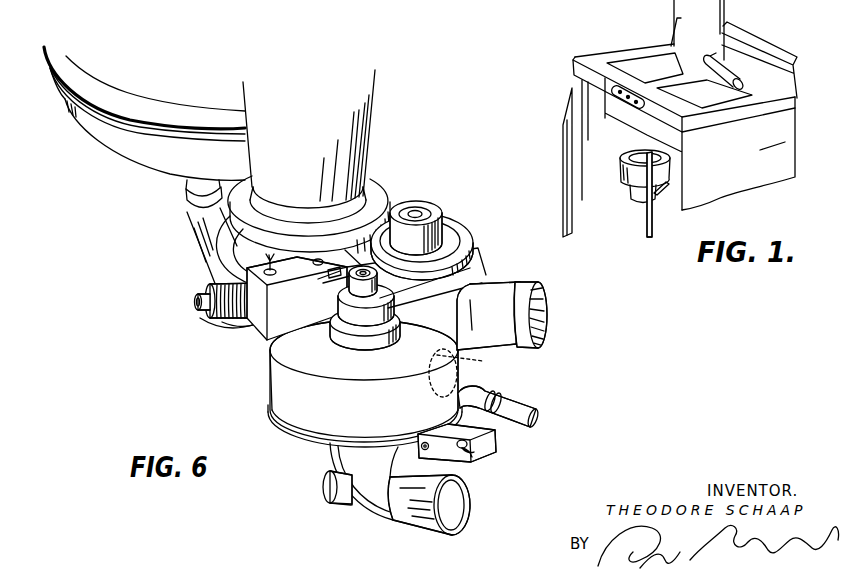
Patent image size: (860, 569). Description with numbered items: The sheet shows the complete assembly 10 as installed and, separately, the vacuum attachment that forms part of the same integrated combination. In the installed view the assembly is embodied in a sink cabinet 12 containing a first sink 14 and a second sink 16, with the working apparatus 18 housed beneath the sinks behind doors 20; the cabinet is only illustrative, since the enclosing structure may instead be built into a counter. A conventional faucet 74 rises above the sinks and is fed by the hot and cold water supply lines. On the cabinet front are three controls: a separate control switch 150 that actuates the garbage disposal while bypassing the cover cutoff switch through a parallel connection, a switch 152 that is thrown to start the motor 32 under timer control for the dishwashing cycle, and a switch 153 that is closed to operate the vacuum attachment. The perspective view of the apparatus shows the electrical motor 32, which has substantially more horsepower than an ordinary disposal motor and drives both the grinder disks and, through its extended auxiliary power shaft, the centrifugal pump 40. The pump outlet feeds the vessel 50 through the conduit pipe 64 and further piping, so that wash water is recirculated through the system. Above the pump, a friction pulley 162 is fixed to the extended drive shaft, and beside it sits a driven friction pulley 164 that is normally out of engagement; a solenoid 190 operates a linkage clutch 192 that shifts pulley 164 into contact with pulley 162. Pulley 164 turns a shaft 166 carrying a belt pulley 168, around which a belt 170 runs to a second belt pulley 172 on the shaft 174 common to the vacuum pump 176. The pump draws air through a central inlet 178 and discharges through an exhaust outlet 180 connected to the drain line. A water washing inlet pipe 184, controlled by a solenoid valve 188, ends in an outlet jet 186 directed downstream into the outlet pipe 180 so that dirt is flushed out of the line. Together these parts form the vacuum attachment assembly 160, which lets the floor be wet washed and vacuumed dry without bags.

In FIG. 1, the complete assembly 10 is at (755, 35).
In FIG. 1, the sink cabinet 12 is at (790, 110).
In FIG. 1, the first sink 14 is at (738, 95).
In FIG. 1, the second sink 16 is at (635, 64).
In FIG. 1, the apparatus 18 is at (630, 182).
In FIG. 1, the doors 20 is at (568, 132).
In FIG. 1, the faucet 74 is at (714, 54).
In FIG. 1, the control switch 150 is at (643, 106).
In FIG. 1, the switch 152 is at (614, 96).
In FIG. 1, the switch 153 is at (633, 107).
In FIG. 6, the electrical motor 32 is at (357, 128).
In FIG. 6, the vessel 50 is at (105, 148).
In FIG. 6, the conduit pipe 64 is at (200, 213).
In FIG. 6, the centrifugal pump 40 is at (228, 325).
In FIG. 6, the vacuum attachment assembly 160 is at (481, 281).
In FIG. 6, the friction pulley 162 is at (373, 190).
In FIG. 6, the driven friction pulley 164 is at (428, 208).
In FIG. 6, the shaft 166 is at (413, 211).
In FIG. 6, the belt pulley 168 is at (457, 228).
In FIG. 6, the belt 170 is at (415, 293).
In FIG. 6, the second belt pulley 172 is at (343, 288).
In FIG. 6, the shaft 174 is at (364, 273).
In FIG. 6, the vacuum pump 176 is at (295, 410).
In FIG. 6, the central inlet 178 is at (452, 513).
In FIG. 6, the exhaust outlet 180 is at (600, 313).
In FIG. 6, the water washing inlet pipe 184 is at (512, 408).
In FIG. 6, the outlet jet 186 is at (483, 361).
In FIG. 6, the solenoid valve 188 is at (474, 441).
In FIG. 6, the solenoid 190 is at (258, 322).
In FIG. 6, the linkage clutch 192 is at (328, 268).